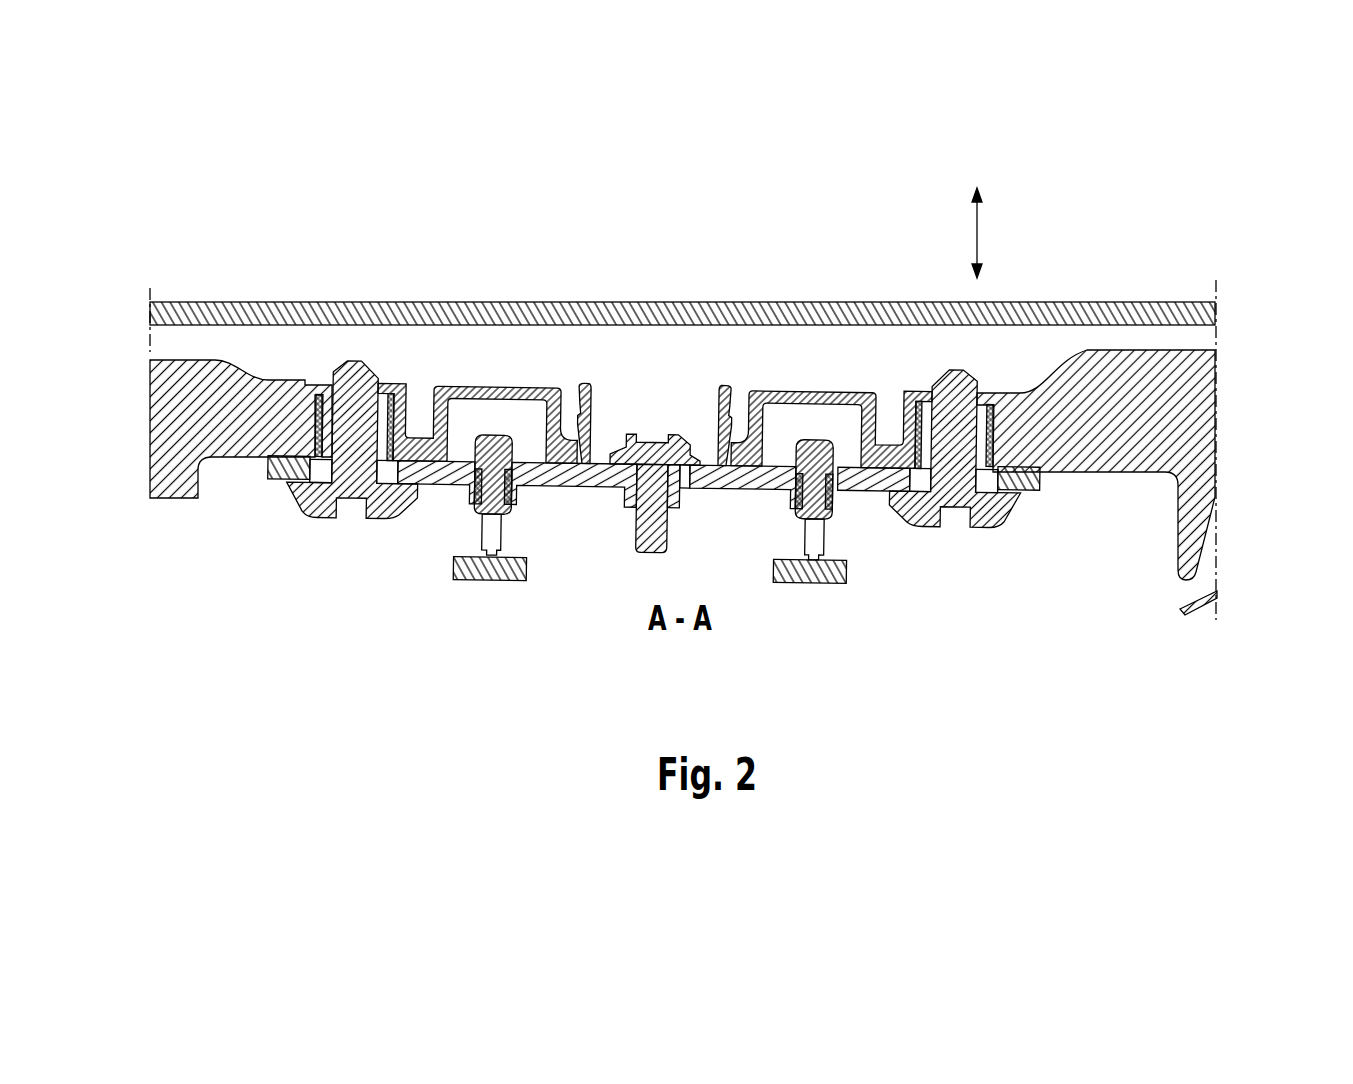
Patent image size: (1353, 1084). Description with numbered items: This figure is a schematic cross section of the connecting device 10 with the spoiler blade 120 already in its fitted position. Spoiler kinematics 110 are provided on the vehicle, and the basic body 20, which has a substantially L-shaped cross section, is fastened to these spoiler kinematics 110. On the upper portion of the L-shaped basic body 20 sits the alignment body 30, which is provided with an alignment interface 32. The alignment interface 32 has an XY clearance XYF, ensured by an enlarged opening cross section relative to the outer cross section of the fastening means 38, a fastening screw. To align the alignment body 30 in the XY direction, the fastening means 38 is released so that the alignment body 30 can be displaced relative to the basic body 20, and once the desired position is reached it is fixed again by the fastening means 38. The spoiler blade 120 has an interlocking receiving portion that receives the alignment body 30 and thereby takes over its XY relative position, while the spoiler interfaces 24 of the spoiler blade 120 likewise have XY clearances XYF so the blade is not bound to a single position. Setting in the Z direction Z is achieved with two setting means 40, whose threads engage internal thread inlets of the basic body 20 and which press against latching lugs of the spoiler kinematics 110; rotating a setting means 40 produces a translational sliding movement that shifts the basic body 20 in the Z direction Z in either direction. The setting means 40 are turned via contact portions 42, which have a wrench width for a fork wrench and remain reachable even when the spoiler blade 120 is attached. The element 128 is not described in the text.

The connecting device 10 is at (236, 494).
The basic body 20 is at (275, 480).
The spoiler interface 24 is at (325, 468).
The alignment body 30 is at (583, 387).
The alignment interface 32 is at (684, 482).
The fastening means 38 is at (636, 438).
The setting means 40 is at (492, 450).
The contact portion 42 is at (492, 537).
The spoiler kinematics 110 is at (492, 570).
The spoiler blade 120 is at (1175, 397).
The clamping element 128 is at (357, 490).
The XY clearance XYF is at (682, 470).
The Z direction Z is at (978, 234).